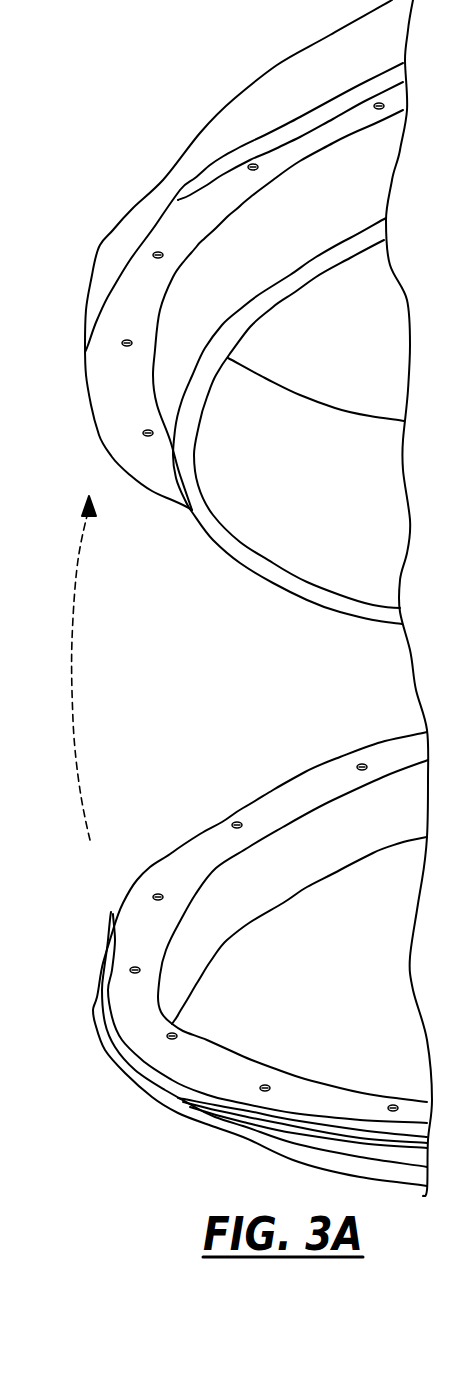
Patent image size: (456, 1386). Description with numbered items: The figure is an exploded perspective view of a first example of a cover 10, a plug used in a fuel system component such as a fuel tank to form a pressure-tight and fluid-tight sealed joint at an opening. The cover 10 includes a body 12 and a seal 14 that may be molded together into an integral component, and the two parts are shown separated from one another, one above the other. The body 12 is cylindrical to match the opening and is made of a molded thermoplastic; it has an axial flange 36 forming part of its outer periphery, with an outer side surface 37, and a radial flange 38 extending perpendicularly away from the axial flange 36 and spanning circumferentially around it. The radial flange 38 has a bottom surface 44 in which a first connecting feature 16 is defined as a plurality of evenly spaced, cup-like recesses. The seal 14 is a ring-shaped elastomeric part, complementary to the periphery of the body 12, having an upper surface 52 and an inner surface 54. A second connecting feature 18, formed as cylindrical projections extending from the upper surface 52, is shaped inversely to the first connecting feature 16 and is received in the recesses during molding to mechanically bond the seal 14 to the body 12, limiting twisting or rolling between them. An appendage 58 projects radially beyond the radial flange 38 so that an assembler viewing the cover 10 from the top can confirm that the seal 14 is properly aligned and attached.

The cover 10 is at (65, 793).
The body 12 is at (227, 120).
The seal 14 is at (200, 957).
The first connecting feature 16 is at (247, 167).
The second connecting feature 18 is at (135, 970).
The axial flange 36 is at (287, 77).
The side surface 37 is at (250, 286).
The radial flange 38 is at (218, 162).
The bottom surface 44 is at (120, 405).
The upper surface 52 is at (275, 798).
The inner surface 54 is at (253, 890).
The appendage 58 is at (109, 1030).